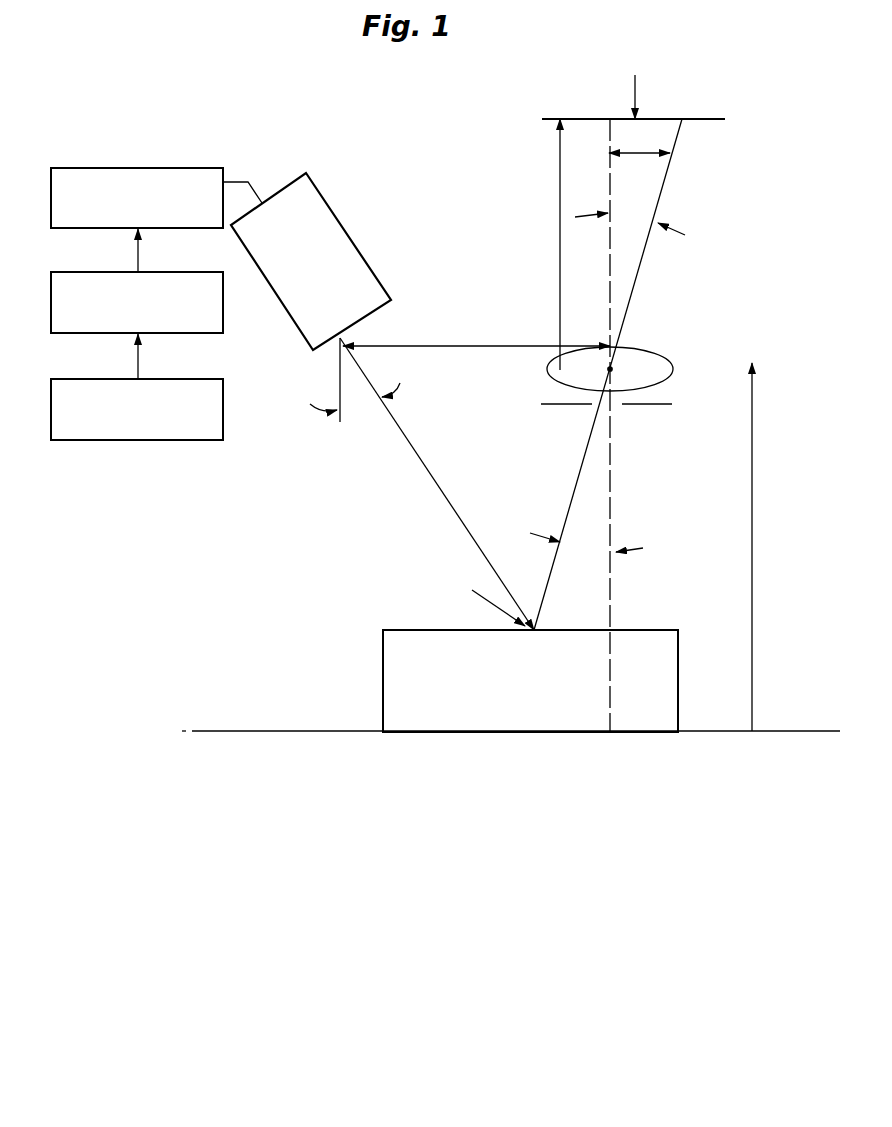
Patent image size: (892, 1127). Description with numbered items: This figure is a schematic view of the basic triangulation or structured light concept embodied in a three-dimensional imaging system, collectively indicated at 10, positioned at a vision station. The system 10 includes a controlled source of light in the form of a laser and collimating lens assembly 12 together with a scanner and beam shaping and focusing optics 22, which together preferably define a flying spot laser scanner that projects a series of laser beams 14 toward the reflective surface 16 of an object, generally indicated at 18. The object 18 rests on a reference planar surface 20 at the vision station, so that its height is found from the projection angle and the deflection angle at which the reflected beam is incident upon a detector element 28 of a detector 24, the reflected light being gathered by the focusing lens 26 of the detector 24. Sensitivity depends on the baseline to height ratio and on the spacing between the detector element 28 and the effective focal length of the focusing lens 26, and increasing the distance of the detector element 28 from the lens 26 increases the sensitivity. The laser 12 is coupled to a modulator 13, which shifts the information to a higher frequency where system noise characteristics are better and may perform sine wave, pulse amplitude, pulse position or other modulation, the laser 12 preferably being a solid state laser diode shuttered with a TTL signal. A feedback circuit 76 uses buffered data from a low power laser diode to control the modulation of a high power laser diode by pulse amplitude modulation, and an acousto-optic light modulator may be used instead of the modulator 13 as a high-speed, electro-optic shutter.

The 3-D imaging system 10 is at (780, 229).
The laser and collimating lens assembly 12 is at (107, 168).
The modulator 13 is at (106, 272).
The laser beams 14 is at (570, 503).
The reflective surface 16 is at (416, 631).
The object 18 is at (642, 627).
The reference planar surface 20 is at (272, 731).
The scanner and beam shaping and focusing optics 22 is at (335, 209).
The detector 24 is at (647, 410).
The focusing lens 26 is at (648, 350).
The detector element 28 is at (693, 119).
The feedback circuit 76 is at (110, 379).